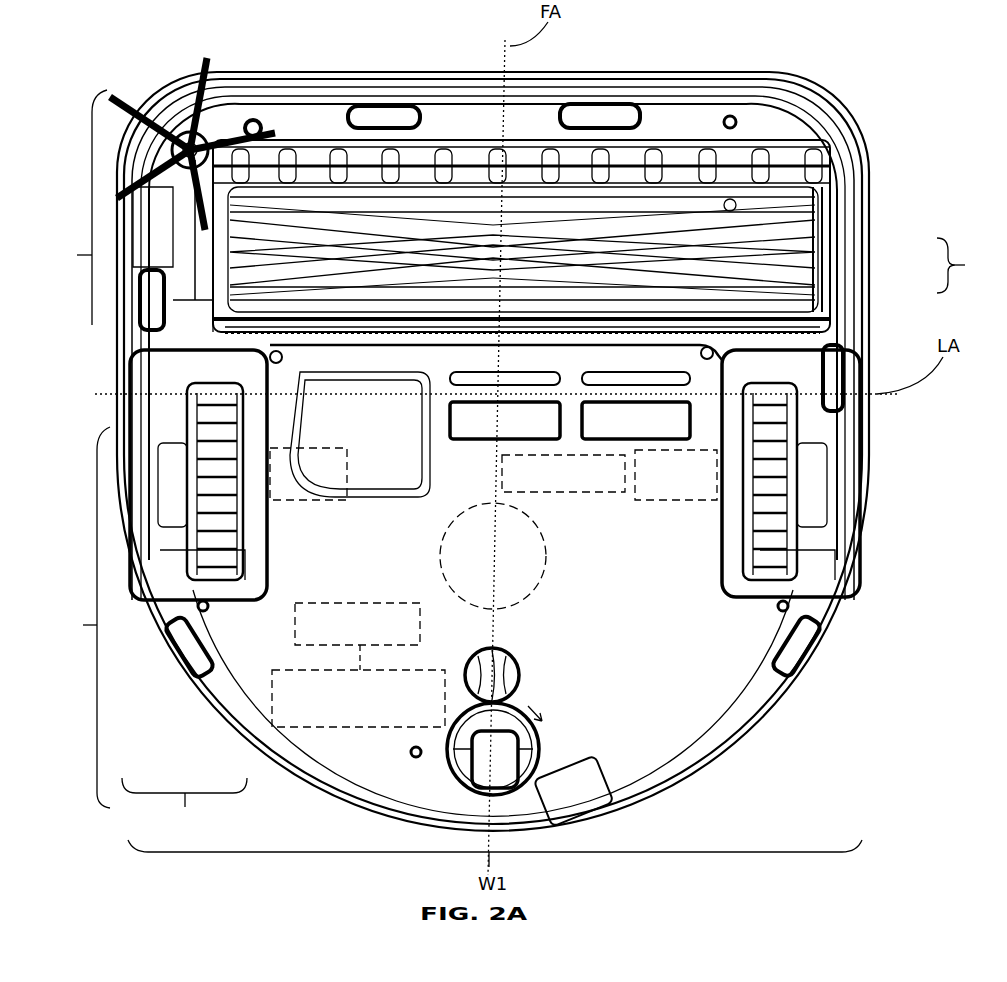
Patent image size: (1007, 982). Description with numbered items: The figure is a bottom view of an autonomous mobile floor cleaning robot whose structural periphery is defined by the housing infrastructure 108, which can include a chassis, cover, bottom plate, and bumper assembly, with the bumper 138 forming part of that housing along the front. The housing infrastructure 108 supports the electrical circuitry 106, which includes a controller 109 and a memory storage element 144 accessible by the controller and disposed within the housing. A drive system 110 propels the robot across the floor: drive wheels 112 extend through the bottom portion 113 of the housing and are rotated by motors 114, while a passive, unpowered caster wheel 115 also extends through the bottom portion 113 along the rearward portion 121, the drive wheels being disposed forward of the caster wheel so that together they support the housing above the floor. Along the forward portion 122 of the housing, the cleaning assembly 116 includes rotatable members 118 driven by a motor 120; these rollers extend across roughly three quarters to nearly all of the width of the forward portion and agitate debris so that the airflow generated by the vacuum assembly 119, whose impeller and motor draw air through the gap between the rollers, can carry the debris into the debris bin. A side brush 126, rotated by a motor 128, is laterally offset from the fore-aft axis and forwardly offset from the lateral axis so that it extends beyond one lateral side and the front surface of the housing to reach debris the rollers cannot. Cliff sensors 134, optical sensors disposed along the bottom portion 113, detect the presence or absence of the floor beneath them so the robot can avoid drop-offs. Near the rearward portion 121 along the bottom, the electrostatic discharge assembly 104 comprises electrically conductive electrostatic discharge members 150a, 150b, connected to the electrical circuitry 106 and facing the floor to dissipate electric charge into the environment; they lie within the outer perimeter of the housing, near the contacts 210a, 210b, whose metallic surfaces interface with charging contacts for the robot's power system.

The electrostatic discharge assembly 104 is at (436, 356).
The electrical circuitry 106 is at (184, 805).
The housing infrastructure 108 is at (668, 762).
The controller 109 is at (293, 620).
The drive system 110 is at (495, 483).
The drive wheels 112 is at (240, 505).
The bottom portion 113 is at (539, 473).
The motors 114 is at (270, 498).
The caster wheel 115 is at (507, 757).
The cleaning assembly 116 is at (607, 236).
The rotatable members 118 is at (808, 298).
The vacuum assembly 119 is at (493, 556).
The motor 120 is at (563, 473).
The rearward portion 121 is at (79, 617).
The forward portion 122 is at (75, 207).
The brush 126 is at (110, 97).
The motor 128 is at (170, 150).
The cliff sensors 134 is at (395, 108).
The bumper 138 is at (740, 78).
The memory storage element 144 is at (272, 710).
The electrostatic discharge member 150a is at (557, 372).
The electrostatic discharge member 150b is at (619, 372).
The contact 210a is at (505, 420).
The contact 210b is at (636, 420).